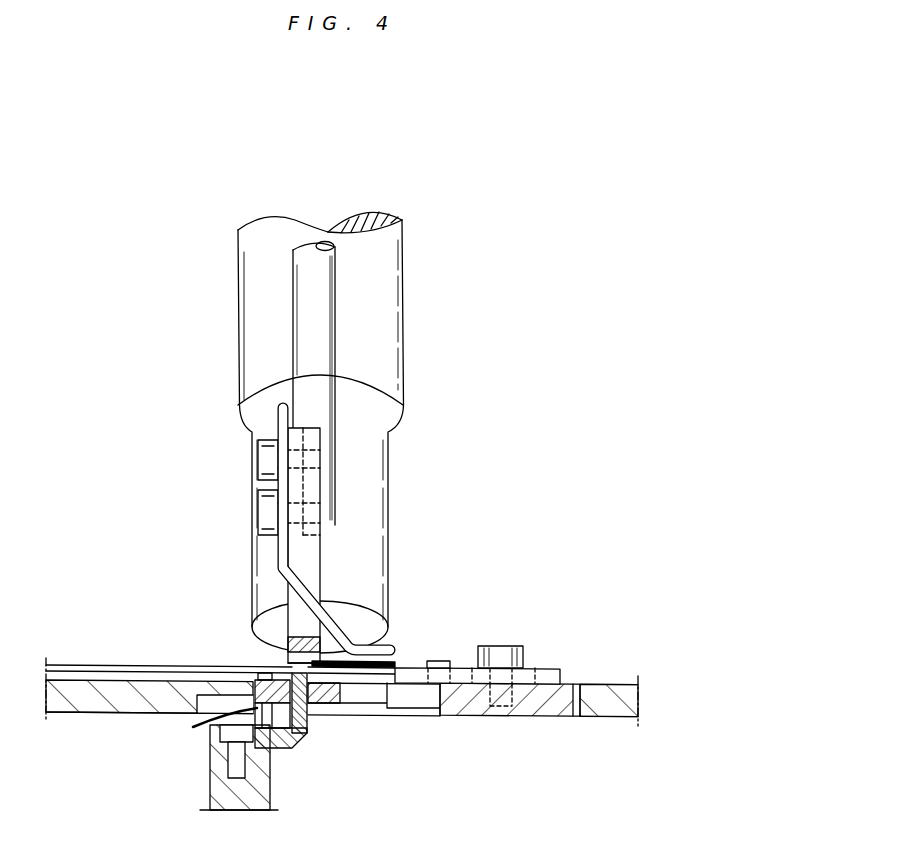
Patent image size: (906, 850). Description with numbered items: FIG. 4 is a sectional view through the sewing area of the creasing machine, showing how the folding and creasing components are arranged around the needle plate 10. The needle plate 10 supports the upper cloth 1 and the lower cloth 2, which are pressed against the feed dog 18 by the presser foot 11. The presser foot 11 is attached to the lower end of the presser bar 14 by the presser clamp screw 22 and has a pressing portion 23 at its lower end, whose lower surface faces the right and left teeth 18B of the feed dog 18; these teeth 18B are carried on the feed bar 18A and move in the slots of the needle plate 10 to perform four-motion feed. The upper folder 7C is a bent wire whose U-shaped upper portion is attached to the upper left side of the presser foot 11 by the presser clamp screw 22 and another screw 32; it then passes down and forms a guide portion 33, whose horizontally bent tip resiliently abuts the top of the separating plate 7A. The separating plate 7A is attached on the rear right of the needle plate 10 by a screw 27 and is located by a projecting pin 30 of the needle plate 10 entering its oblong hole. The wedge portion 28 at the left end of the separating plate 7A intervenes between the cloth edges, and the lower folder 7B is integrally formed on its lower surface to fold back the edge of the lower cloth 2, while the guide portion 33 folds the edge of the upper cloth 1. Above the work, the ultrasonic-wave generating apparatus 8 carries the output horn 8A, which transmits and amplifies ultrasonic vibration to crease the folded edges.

The upper cloth 1 is at (94, 665).
The lower cloth 2 is at (108, 676).
The separating plate 7A is at (544, 664).
The lower folder 7B is at (376, 703).
The upper folder 7C is at (281, 403).
The ultrasonic-wave generating apparatus 8 is at (405, 253).
The output horn 8A is at (390, 465).
The needle plate 10 is at (548, 708).
The presser foot 11 is at (293, 550).
The presser bar 14 is at (300, 257).
The feed dog 18 is at (291, 749).
The feed bar 18A is at (222, 796).
The teeth 18B is at (193, 727).
The presser clamp screw 22 is at (265, 452).
The pressing portion 23 is at (290, 637).
The screw 27 is at (503, 645).
The wedge portion 28 is at (385, 648).
The projecting pin 30 is at (440, 660).
The screw 32 is at (265, 500).
The guide portion 33 is at (347, 622).